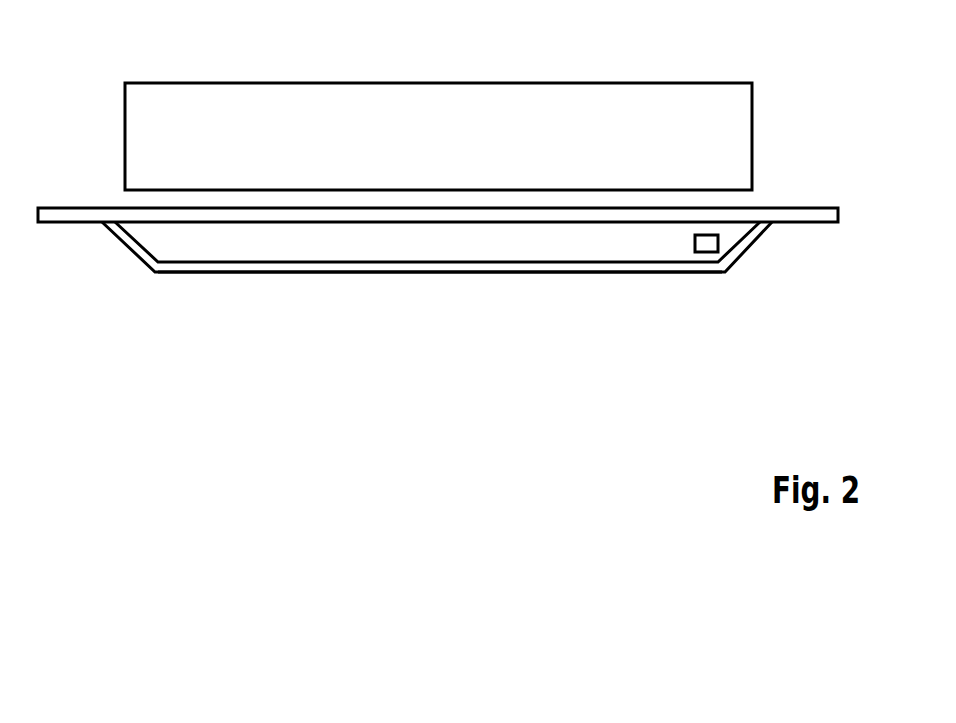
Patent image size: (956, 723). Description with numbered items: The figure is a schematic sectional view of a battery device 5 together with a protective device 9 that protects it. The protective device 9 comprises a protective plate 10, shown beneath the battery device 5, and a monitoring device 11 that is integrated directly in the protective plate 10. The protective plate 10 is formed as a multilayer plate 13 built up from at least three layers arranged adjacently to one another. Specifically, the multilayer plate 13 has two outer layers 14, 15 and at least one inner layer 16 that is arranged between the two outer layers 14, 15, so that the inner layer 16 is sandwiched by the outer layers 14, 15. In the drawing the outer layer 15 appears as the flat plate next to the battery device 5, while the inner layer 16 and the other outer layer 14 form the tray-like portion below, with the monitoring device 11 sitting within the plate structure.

The battery device 5 is at (393, 93).
The outer layer 15 is at (797, 208).
The protective device 9 is at (437, 315).
The protective plate 10 is at (218, 250).
The inner layer 16 is at (465, 250).
The outer layer 14 is at (537, 274).
The multilayer plate 13 is at (653, 321).
The monitoring device 11 is at (708, 246).